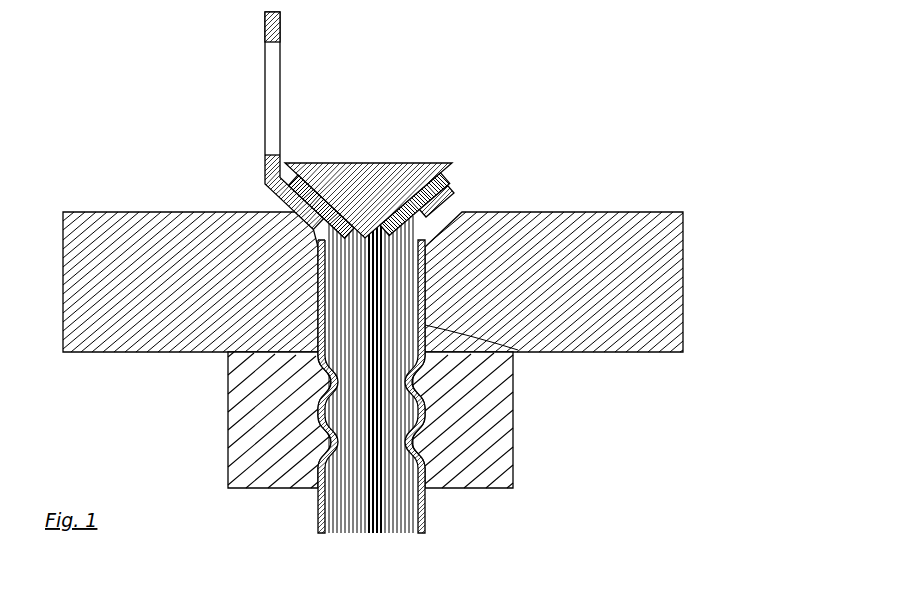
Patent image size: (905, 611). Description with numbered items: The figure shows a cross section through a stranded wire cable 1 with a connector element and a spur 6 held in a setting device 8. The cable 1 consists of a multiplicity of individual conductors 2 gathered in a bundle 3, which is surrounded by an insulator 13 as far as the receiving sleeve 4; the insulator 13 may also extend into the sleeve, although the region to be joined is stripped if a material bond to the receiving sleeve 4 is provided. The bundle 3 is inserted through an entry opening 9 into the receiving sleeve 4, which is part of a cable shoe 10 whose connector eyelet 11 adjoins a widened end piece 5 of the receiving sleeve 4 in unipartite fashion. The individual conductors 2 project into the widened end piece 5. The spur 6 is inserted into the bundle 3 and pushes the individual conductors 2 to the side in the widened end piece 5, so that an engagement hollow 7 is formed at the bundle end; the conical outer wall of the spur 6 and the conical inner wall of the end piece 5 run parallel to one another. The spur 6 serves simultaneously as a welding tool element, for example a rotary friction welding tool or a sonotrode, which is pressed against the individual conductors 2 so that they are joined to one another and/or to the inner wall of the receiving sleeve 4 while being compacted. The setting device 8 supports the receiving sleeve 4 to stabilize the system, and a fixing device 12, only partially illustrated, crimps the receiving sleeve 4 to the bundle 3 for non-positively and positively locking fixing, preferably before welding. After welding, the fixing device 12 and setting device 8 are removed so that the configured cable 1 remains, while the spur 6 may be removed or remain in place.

The stranded wire cable 1 is at (429, 166).
The individual conductors 2 is at (386, 520).
The bundle 3 is at (328, 496).
The receiving sleeve 4 is at (527, 352).
The widened end piece 5 is at (445, 218).
The spur 6 is at (376, 200).
The engagement hollow 7 is at (452, 188).
The setting device 8 is at (185, 342).
The entry opening 9 is at (396, 503).
The cable shoe 10 is at (240, 120).
The connector eyelet 11 is at (265, 25).
The fixing device 12 is at (258, 421).
The insulator 13 is at (313, 517).